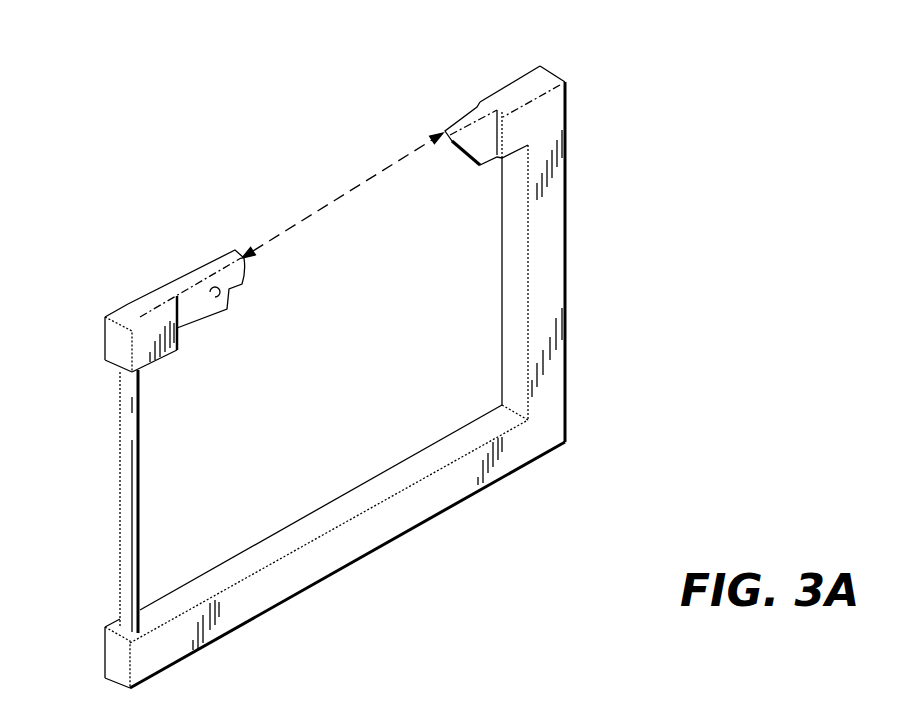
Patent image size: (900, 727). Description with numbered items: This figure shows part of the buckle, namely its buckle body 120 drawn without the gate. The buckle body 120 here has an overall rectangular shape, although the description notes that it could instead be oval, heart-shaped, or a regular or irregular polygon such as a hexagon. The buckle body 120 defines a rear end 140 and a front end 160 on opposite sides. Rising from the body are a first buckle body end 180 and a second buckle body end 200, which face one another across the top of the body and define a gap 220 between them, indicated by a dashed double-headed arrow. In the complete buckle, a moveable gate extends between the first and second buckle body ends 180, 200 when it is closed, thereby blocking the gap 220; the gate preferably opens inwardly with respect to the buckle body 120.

The buckle body 120 is at (372, 545).
The rear end 140 is at (130, 492).
The front end 160 is at (565, 258).
The first buckle body end 180 is at (225, 250).
The second buckle body end 200 is at (443, 128).
The gap 220 is at (338, 193).